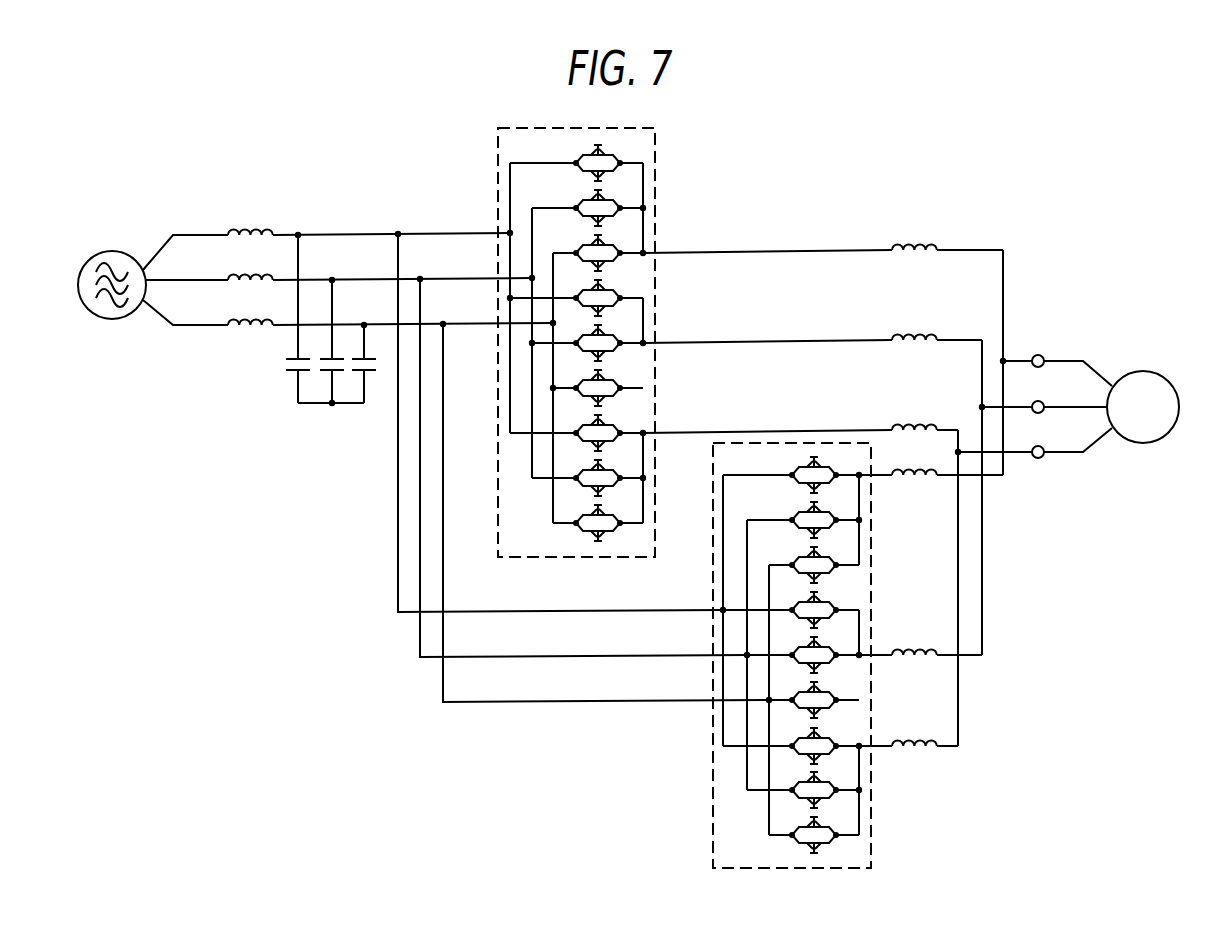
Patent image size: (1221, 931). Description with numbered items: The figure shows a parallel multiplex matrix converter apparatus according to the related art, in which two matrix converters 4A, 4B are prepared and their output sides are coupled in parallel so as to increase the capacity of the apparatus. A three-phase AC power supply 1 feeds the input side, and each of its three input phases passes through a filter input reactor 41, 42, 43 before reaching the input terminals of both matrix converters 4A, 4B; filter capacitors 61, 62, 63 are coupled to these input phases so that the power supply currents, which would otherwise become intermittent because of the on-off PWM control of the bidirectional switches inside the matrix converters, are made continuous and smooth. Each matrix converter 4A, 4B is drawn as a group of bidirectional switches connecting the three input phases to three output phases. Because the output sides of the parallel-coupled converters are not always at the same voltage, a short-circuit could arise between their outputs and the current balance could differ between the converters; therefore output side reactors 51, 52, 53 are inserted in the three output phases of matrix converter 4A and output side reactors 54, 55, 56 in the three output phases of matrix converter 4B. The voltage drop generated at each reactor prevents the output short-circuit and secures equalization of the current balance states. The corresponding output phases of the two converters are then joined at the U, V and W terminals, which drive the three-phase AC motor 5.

The three-phase AC power supply 1 is at (112, 250).
The filter input reactor 41 is at (229, 234).
The filter input reactor 42 is at (229, 279).
The filter input reactor 43 is at (229, 324).
The filter capacitor 61 is at (290, 372).
The filter capacitor 62 is at (325, 372).
The filter capacitor 63 is at (372, 372).
The matrix converter 4A is at (557, 557).
The matrix converter 4B is at (872, 818).
The output side reactor 51 is at (927, 245).
The output side reactor 52 is at (927, 335).
The output side reactor 53 is at (927, 425).
The output side reactor 54 is at (930, 480).
The output side reactor 55 is at (930, 648).
The output side reactor 56 is at (930, 740).
The three-phase AC motor 5 is at (1143, 370).